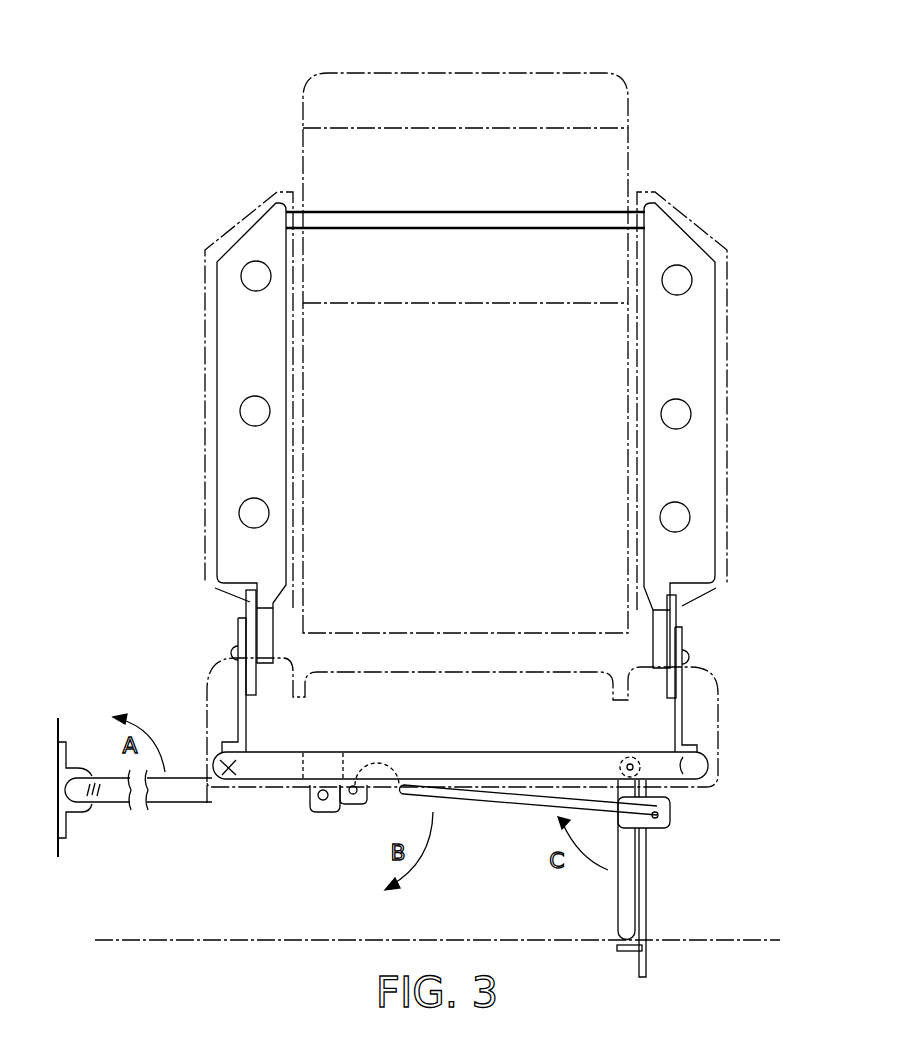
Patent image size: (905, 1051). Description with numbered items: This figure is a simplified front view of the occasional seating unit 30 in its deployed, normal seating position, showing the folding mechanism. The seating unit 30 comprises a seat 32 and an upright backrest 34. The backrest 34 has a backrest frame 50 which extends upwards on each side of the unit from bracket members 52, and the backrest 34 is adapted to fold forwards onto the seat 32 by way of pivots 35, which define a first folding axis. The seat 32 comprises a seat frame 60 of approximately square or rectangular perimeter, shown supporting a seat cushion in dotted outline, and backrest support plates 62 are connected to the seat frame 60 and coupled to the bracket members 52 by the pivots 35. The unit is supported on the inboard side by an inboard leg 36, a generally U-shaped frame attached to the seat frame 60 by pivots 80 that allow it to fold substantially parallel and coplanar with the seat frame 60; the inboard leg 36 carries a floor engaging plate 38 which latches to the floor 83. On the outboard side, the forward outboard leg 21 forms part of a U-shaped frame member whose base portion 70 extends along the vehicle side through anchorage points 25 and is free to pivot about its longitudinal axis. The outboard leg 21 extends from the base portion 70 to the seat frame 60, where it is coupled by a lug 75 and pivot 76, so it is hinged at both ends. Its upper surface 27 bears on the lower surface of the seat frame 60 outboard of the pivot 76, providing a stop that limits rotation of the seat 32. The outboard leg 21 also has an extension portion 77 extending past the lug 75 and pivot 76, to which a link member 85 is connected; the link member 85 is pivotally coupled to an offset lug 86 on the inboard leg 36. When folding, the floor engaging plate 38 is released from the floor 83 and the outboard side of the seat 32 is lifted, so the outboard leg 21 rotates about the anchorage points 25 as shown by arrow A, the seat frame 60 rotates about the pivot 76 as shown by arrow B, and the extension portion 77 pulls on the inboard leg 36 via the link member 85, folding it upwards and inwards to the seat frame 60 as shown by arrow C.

The occasional seating unit 30 is at (195, 122).
The backrest 34 is at (387, 70).
The seat 32 is at (423, 673).
The backrest frame 50 is at (697, 362).
The bracket members 52 is at (246, 599).
The pivots 35 is at (236, 652).
The backrest support plates 62 is at (240, 707).
The seat frame 60 is at (228, 770).
The pivots 80 is at (620, 760).
The anchorage points 25 is at (66, 742).
The base portion 70 is at (79, 798).
The forward outboard leg 21 is at (168, 792).
The upper surface 27 is at (211, 792).
The lugs 75 is at (323, 813).
The pivots 76 is at (313, 802).
The extension portion 77 is at (362, 805).
The link member 85 is at (490, 801).
The offset lug 86 is at (671, 816).
The inboard leg 36 is at (620, 901).
The floor engaging plate 38 is at (646, 927).
The floor 83 is at (255, 946).